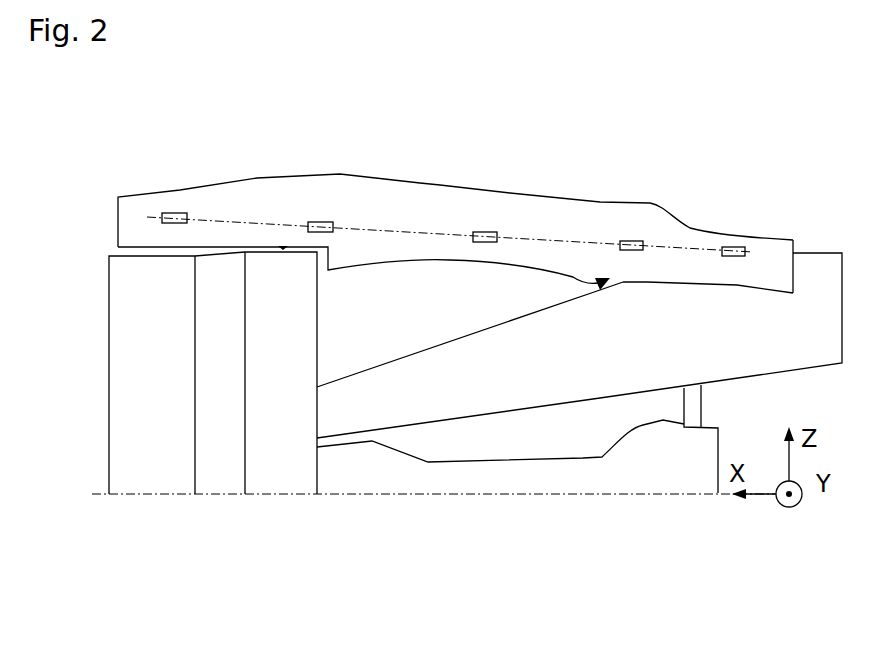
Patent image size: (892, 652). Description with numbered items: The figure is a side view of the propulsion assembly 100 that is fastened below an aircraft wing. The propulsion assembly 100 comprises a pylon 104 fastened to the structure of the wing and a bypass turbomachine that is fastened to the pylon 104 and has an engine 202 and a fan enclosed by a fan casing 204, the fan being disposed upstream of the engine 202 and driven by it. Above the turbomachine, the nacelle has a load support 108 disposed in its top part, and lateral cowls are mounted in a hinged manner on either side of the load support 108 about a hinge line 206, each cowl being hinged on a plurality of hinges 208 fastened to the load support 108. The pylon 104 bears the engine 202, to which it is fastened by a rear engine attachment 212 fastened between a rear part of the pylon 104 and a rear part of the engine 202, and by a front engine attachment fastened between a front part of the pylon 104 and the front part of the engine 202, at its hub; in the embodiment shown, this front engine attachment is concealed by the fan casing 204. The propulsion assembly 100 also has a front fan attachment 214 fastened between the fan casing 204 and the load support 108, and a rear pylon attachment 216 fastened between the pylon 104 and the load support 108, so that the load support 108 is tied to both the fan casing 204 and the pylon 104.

The propulsion assembly 100 is at (706, 92).
The pylon 104 is at (601, 369).
The load support 108 is at (330, 187).
The engine 202 is at (572, 478).
The fan casing 204 is at (261, 472).
The hinge line 206 is at (757, 250).
The hinges 208 is at (488, 231).
The rear engine attachment 212 is at (692, 410).
The front fan attachment 214 is at (283, 248).
The rear pylon attachment 216 is at (598, 283).